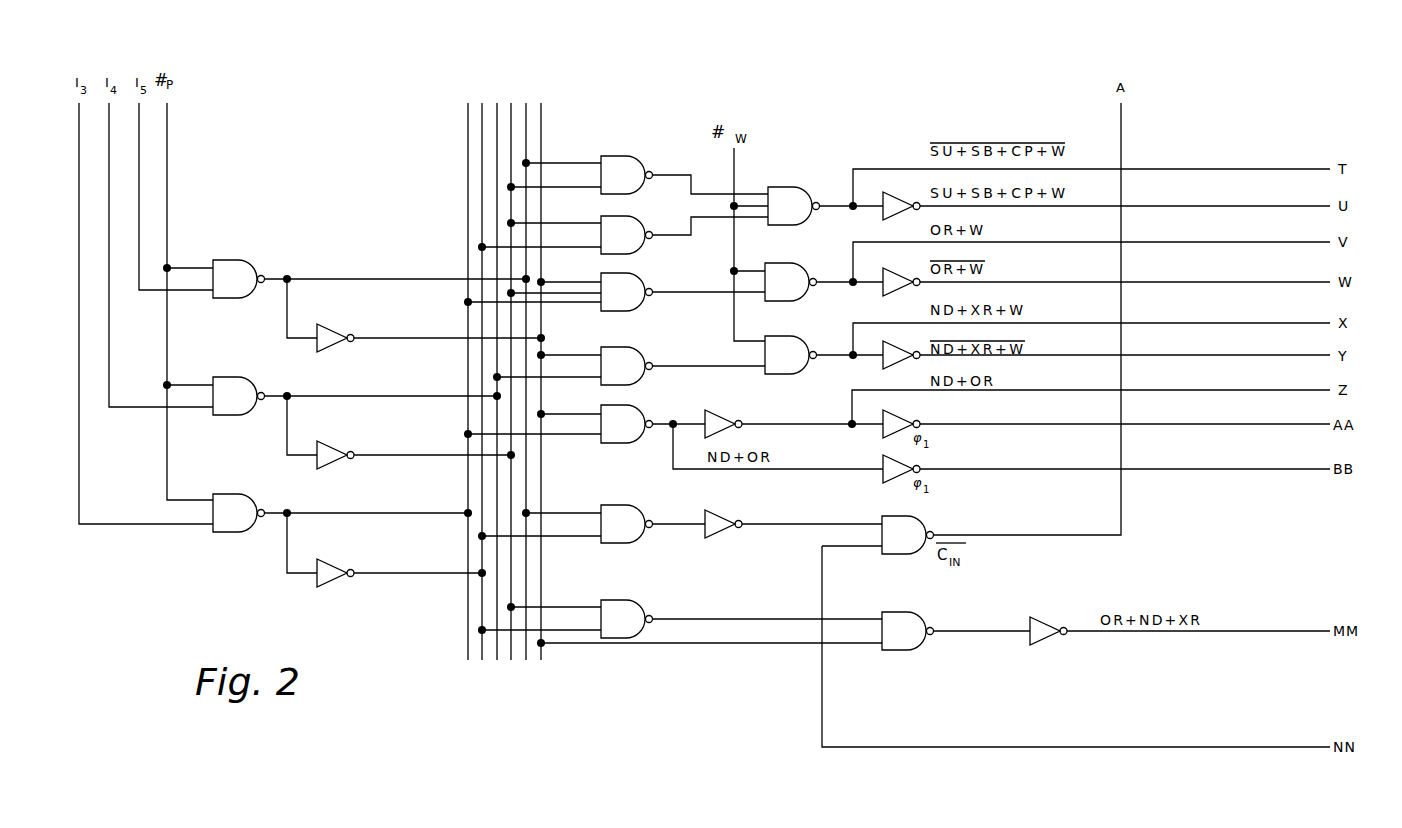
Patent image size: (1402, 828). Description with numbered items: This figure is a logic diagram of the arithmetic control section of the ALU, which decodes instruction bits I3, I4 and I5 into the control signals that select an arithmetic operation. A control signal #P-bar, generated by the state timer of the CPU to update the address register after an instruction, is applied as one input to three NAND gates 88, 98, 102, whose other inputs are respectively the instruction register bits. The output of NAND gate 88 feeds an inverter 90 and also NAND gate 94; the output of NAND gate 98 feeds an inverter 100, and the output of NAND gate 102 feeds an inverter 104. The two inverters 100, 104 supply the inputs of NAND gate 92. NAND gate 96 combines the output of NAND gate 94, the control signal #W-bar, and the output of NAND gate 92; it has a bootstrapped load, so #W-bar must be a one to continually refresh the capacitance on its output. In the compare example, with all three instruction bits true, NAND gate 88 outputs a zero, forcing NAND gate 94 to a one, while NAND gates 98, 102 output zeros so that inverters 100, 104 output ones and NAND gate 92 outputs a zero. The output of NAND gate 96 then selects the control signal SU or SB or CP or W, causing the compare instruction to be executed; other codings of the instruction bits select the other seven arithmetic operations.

The NAND gate 88 is at (239, 279).
The inverter 90 is at (331, 331).
The NAND gate 92 is at (627, 235).
The NAND gate 94 is at (627, 175).
The NAND gate 96 is at (794, 206).
The NAND gate 98 is at (239, 396).
The inverter 100 is at (331, 448).
The NAND gate 102 is at (239, 513).
The inverter 104 is at (331, 566).